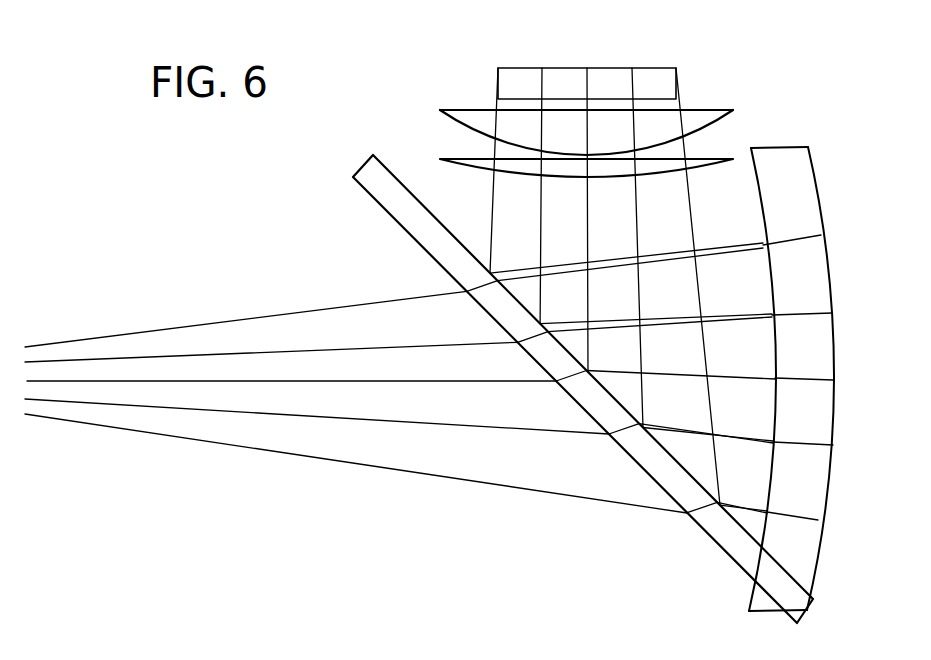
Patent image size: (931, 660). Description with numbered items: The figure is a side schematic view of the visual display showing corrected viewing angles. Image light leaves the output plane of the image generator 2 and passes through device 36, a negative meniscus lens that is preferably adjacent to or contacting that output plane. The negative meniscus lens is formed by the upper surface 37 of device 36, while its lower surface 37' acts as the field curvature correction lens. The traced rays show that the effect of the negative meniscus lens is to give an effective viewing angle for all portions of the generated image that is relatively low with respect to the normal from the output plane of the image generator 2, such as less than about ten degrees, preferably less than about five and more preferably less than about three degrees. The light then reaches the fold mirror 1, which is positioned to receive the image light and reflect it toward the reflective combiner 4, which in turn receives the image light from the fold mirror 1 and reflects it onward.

The fold mirror 1 is at (380, 200).
The image generator 2 is at (498, 83).
The negative meniscus lens 36 is at (724, 110).
The upper surface 37 is at (596, 92).
The lower surface 37' is at (661, 189).
The reflective combiner 4 is at (818, 163).